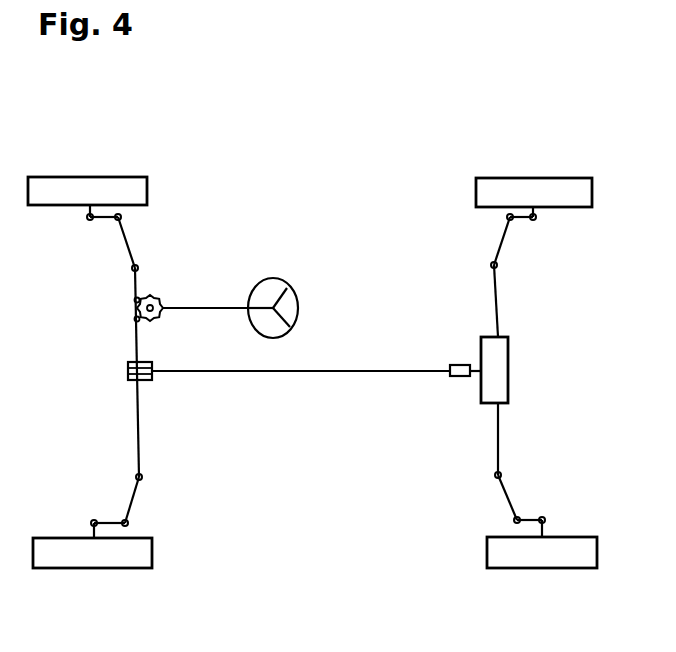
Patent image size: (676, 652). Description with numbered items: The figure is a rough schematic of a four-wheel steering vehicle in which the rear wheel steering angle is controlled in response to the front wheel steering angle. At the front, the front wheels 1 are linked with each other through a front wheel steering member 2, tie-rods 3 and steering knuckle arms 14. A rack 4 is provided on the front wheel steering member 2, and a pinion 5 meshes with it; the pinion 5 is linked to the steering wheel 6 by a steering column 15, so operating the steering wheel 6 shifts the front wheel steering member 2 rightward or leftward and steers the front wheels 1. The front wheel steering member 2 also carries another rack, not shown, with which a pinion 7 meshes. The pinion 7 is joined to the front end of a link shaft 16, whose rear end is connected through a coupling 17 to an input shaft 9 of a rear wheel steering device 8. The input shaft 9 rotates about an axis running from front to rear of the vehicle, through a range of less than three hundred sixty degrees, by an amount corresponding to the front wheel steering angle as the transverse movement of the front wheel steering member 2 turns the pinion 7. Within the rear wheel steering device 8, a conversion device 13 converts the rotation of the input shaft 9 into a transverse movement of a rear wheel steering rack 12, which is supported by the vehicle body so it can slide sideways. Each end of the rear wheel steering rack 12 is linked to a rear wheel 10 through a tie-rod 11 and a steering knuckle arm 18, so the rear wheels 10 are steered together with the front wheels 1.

The front wheels 1 is at (132, 193).
The front wheel steering member 2 is at (139, 425).
The tie-rods 3 is at (133, 248).
The rack 4 is at (135, 302).
The pinion 5 is at (158, 302).
The steering wheel 6 is at (298, 307).
The pinion 7 is at (130, 362).
The rear wheel steering device 8 is at (478, 363).
The input shaft 9 is at (478, 378).
The rear wheels 10 is at (498, 185).
The tie-rod 11 is at (502, 247).
The rear wheel steering rack 12 is at (497, 303).
The conversion device 13 is at (492, 388).
The steering knuckle arms 14 is at (103, 219).
The steering column 15 is at (215, 307).
The link shaft 16 is at (263, 372).
The coupling 17 is at (450, 378).
The steering knuckle arm 18 is at (527, 225).